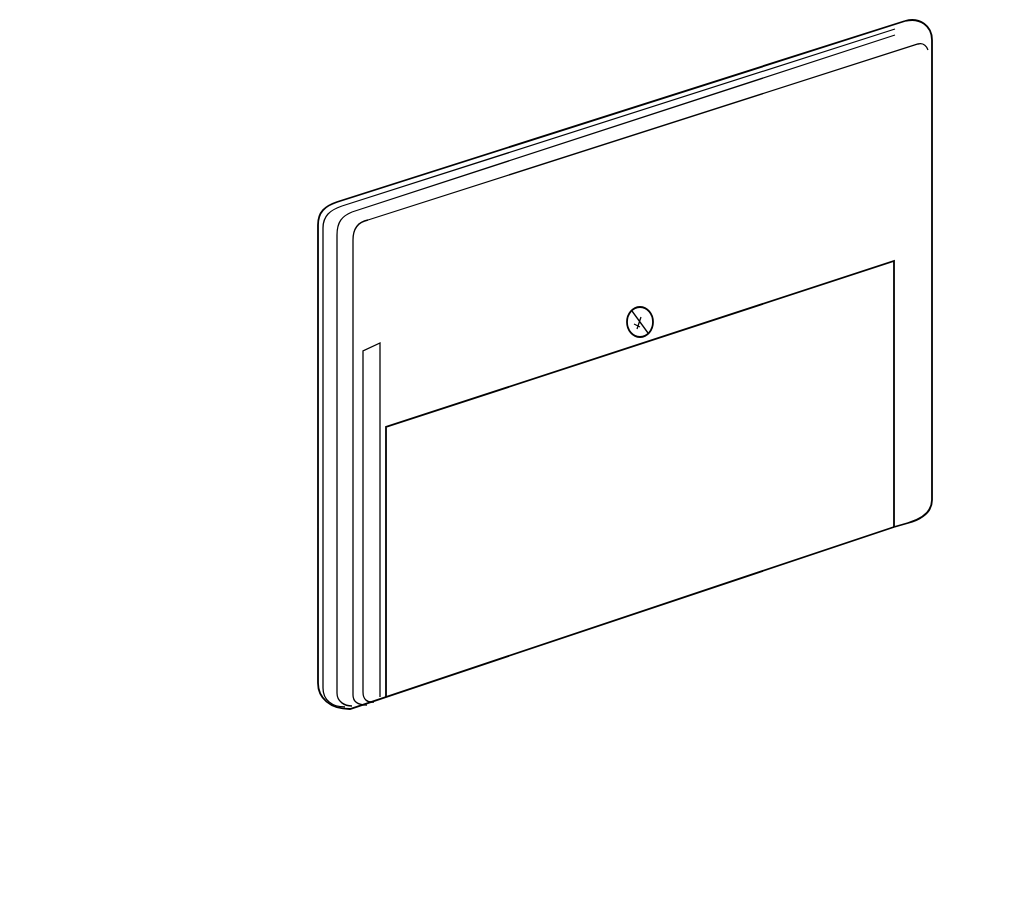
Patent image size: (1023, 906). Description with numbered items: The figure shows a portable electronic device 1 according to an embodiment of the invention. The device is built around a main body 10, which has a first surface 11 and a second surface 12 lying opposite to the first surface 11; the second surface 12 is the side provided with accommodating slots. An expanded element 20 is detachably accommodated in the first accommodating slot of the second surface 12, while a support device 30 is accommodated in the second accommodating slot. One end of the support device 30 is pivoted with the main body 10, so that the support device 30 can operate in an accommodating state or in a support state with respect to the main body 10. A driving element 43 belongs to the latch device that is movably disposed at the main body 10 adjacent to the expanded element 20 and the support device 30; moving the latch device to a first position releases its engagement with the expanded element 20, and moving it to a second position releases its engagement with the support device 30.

The portable electronic device 1 is at (236, 140).
The main body 10 is at (325, 355).
The first surface 11 is at (318, 217).
The second surface 12 is at (913, 178).
The expanded element 20 is at (757, 547).
The support device 30 is at (373, 505).
The driving element 43 is at (626, 325).